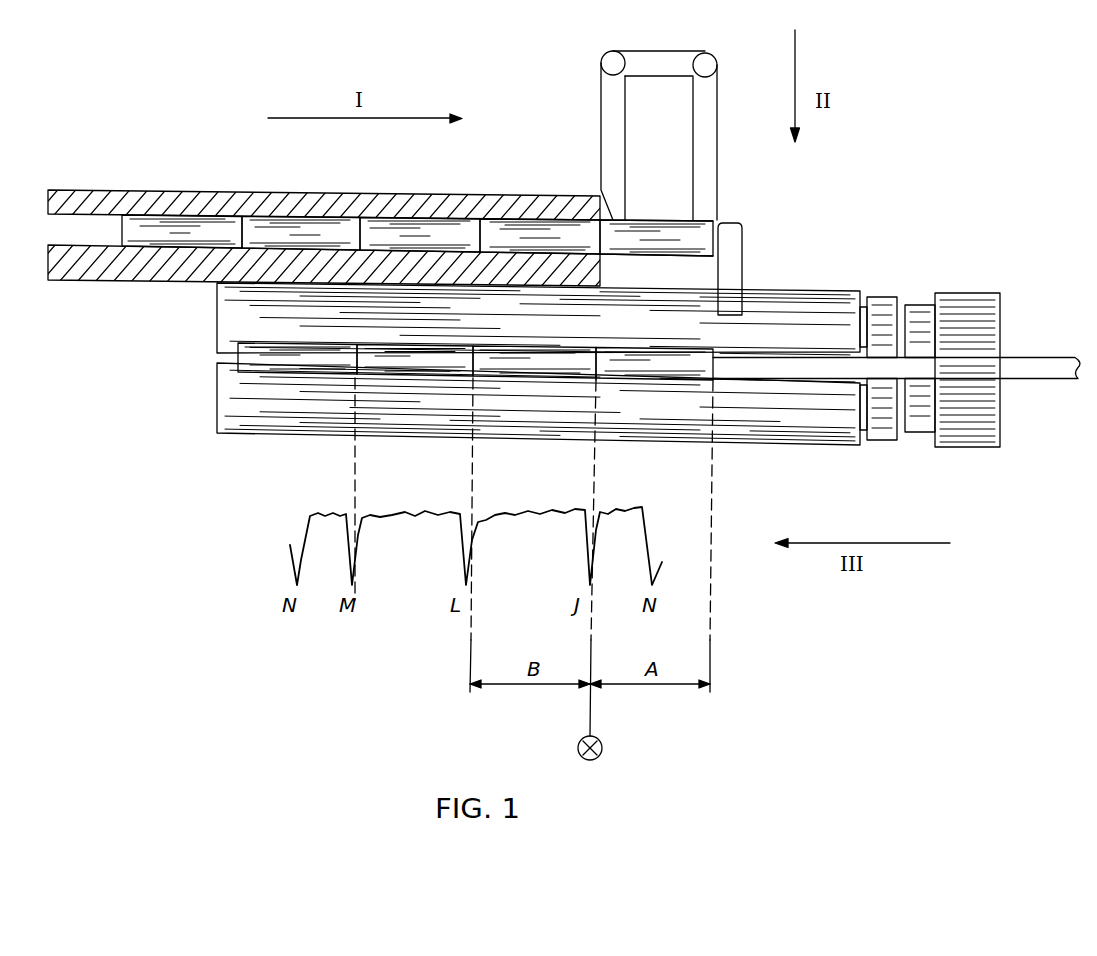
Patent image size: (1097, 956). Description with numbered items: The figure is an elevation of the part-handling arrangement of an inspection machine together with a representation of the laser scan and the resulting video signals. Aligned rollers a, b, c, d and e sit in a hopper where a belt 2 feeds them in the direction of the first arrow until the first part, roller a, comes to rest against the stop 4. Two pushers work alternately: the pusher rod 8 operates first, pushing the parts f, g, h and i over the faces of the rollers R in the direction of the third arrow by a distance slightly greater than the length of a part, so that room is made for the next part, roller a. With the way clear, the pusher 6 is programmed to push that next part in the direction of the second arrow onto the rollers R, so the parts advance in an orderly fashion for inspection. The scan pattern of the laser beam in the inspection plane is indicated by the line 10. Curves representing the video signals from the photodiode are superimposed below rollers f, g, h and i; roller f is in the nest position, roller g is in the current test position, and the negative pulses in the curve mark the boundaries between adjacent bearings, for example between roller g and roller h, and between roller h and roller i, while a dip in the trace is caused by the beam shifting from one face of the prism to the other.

The belt 2 is at (69, 228).
The stop 4 is at (744, 256).
The pusher 6 is at (652, 57).
The pusher rod 8 is at (812, 372).
The scan pattern line of the laser beam 10 is at (625, 375).
The roller a is at (656, 238).
The roller b is at (540, 236).
The roller c is at (420, 235).
The roller d is at (301, 234).
The roller e is at (182, 231).
The roller f is at (654, 364).
The roller g is at (534, 362).
The roller h is at (415, 361).
The roller i is at (297, 358).
The rollers R is at (778, 398).